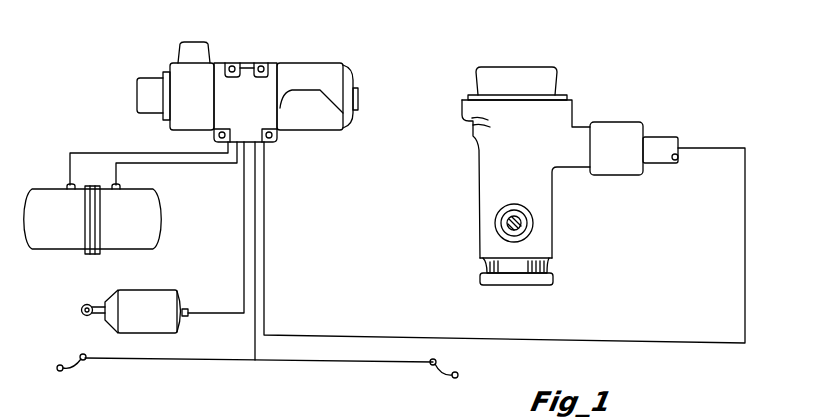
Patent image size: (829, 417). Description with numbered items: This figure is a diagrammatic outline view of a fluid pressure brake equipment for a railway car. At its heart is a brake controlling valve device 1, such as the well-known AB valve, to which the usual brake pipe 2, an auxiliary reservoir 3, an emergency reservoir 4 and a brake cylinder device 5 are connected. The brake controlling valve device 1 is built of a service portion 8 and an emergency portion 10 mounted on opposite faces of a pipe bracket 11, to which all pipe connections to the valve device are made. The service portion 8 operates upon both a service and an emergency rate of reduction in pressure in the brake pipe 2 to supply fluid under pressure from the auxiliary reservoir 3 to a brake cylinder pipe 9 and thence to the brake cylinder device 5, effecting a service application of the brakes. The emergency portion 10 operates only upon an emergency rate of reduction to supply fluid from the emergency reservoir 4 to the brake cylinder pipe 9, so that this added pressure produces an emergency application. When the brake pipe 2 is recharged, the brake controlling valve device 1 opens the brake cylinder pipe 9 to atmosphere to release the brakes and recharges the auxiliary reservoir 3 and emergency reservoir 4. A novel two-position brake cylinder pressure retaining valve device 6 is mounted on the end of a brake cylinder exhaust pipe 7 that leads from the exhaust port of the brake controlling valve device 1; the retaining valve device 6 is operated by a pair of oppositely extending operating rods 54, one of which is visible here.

The brake controlling valve device 1 is at (246, 93).
The brake pipe 2 is at (194, 358).
The auxiliary reservoir 3 is at (105, 210).
The emergency reservoir 4 is at (161, 202).
The brake cylinder device 5 is at (145, 288).
The brake cylinder pressure retaining valve device 6 is at (563, 176).
The brake cylinder exhaust pipe 7 is at (743, 247).
The service portion 8 is at (307, 77).
The brake cylinder pipe 9 is at (243, 248).
The emergency portion 10 is at (185, 73).
The pipe bracket 11 is at (233, 112).
The operating rod 54 is at (521, 223).